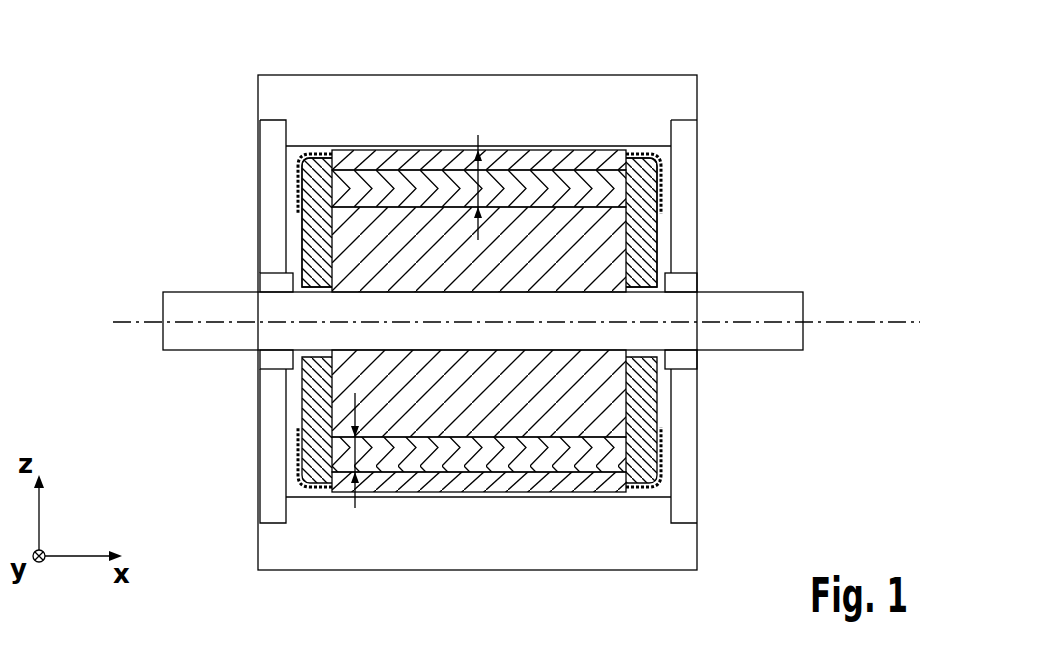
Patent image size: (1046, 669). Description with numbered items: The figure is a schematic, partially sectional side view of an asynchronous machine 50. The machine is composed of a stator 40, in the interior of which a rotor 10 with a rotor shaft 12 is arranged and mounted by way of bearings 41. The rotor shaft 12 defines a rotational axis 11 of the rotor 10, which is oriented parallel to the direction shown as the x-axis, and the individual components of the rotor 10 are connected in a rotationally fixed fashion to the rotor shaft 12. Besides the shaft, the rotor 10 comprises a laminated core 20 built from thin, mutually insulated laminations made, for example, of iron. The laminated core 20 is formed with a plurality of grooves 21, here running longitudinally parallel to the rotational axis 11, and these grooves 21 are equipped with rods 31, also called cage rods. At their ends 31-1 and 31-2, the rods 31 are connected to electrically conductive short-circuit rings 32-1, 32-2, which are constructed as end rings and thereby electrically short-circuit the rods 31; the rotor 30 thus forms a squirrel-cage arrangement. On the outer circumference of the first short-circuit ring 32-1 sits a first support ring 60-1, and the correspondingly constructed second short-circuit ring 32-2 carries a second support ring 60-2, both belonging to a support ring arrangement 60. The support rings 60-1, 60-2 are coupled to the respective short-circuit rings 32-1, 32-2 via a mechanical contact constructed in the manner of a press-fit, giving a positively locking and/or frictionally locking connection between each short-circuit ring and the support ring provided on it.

The asynchronous machine 50 is at (172, 66).
The rotor 10 is at (363, 140).
The laminated core 20 is at (435, 162).
The grooves 21 is at (482, 193).
The rotor 30 is at (676, 242).
The rods 31 is at (560, 190).
The first end of the rods 31-1 is at (320, 185).
The second end of the rods 31-2 is at (658, 183).
The first short-circuit ring 32-1 is at (312, 210).
The second short-circuit ring 32-2 is at (632, 160).
The stator 40 is at (680, 98).
The bearings 41 is at (683, 285).
The support ring arrangement 60 is at (300, 138).
The first support ring 60-1 is at (300, 160).
The second support ring 60-2 is at (658, 165).
The rotational axis 11 is at (902, 322).
The rotor shaft 12 is at (775, 302).